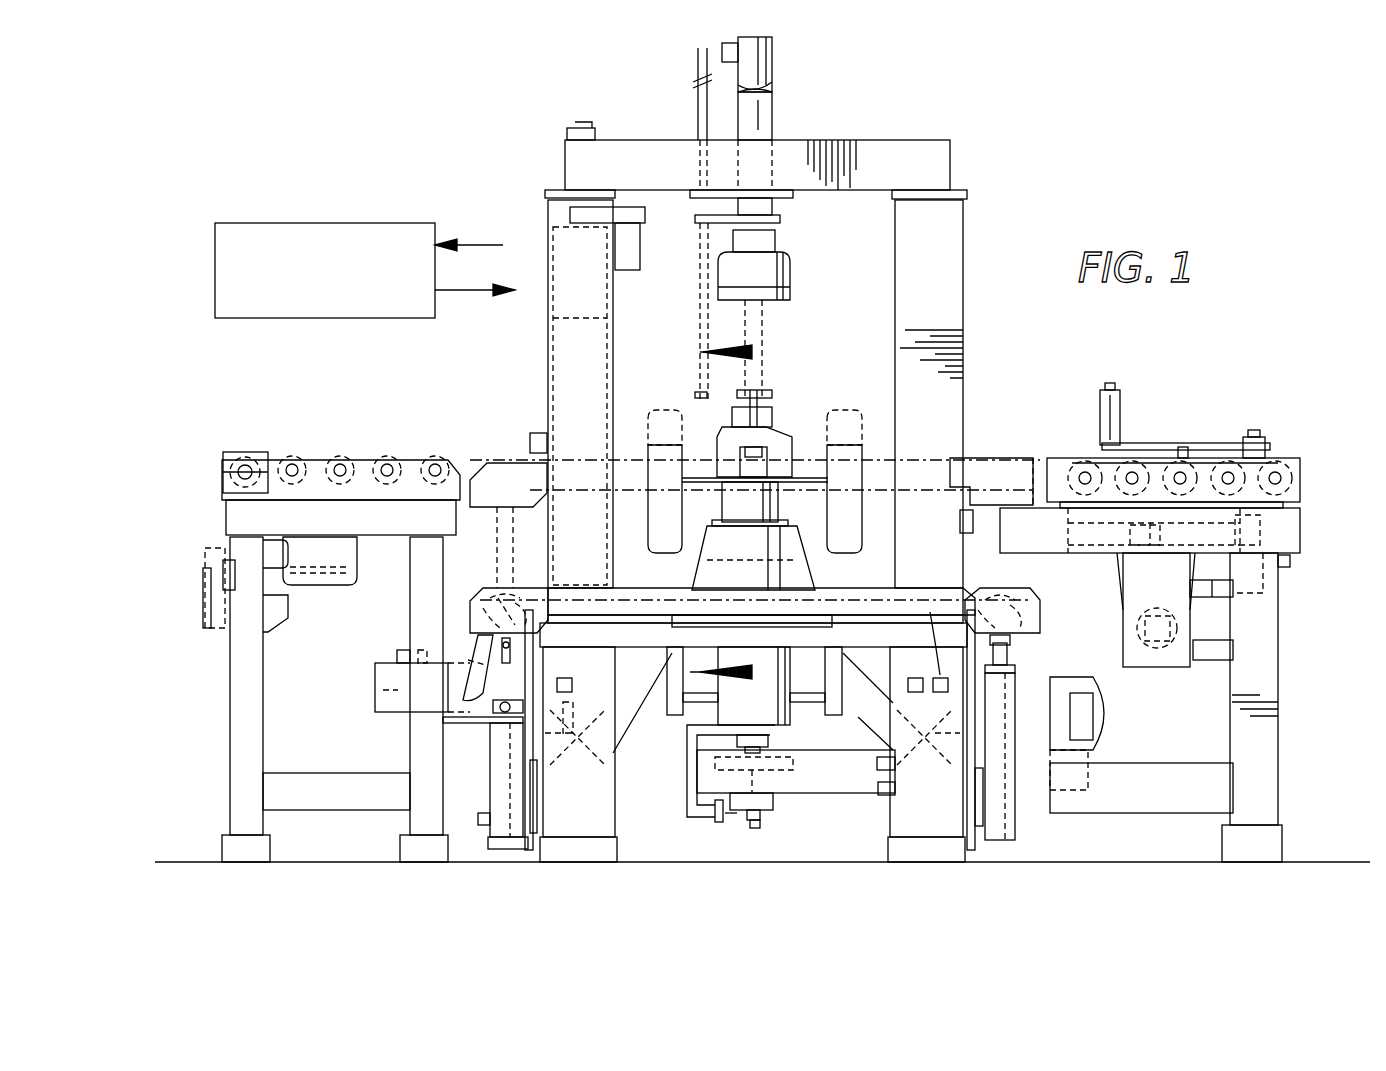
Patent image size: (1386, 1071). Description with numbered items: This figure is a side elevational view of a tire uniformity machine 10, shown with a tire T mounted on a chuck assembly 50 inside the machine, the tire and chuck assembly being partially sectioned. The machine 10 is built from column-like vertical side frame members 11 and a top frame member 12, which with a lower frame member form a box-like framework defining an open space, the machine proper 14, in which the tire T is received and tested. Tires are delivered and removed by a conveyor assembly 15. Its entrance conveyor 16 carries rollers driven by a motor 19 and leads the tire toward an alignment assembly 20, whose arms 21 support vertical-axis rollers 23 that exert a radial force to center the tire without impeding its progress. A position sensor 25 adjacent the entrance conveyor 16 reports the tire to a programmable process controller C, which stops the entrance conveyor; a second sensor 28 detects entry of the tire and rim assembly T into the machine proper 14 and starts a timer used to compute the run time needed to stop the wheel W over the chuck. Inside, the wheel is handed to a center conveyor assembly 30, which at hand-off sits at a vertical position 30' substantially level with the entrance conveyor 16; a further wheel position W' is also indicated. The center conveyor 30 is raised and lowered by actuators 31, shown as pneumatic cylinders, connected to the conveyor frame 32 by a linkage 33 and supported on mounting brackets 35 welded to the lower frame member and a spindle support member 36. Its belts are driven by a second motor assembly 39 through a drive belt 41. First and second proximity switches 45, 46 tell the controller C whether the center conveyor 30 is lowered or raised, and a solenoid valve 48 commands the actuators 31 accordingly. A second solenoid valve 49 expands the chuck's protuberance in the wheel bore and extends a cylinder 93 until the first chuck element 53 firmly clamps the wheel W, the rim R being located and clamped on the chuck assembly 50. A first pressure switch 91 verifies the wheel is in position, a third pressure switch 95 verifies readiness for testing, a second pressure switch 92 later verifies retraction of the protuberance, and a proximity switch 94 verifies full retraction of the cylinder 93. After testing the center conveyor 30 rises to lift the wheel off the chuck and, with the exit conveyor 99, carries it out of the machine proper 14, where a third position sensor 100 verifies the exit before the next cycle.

The programmable controller C is at (300, 225).
The tire uniformity machine 10 is at (520, 198).
The vertical side frame members 11 is at (560, 215).
The top frame member 12 is at (858, 150).
The machine proper 14 is at (812, 397).
The conveyor assembly 15 is at (1018, 452).
The entrance conveyor 16 is at (1252, 472).
The motor 19 is at (1218, 653).
The alignment assembly 20 is at (1128, 440).
The arms 21 is at (1186, 452).
The rollers 23 is at (1120, 440).
The position sensor 25 is at (1246, 472).
The second sensor 28 is at (968, 512).
The center conveyor assembly 30 is at (755, 553).
The vertical position of center conveyor 30' is at (499, 508).
The actuators 31 is at (503, 793).
The frame 32 is at (1000, 628).
The linkage 33 is at (1005, 655).
The mounting brackets 35 is at (530, 812).
The spindle support member 36 is at (637, 712).
The second motor assembly 39 is at (470, 722).
The drive belt 41 is at (478, 650).
The first proximity switch 45 is at (478, 817).
The second proximity switch 46 is at (565, 692).
The solenoid valve 48 is at (890, 795).
The second solenoid valve 49 is at (880, 765).
The chuck assembly 50 is at (693, 322).
The first chuck element 53 is at (795, 272).
The first pressure switch 91 is at (930, 612).
The second pressure switch 92 is at (918, 692).
The cylinder 93 is at (765, 110).
The proximity switch 94 is at (720, 50).
The third pressure switch 95 is at (578, 128).
The exit conveyor 99 is at (364, 455).
The third position sensor 100 is at (540, 435).
The rim R is at (805, 475).
The tire T is at (850, 478).
The wheel W is at (855, 496).
The wheel position W' is at (867, 374).